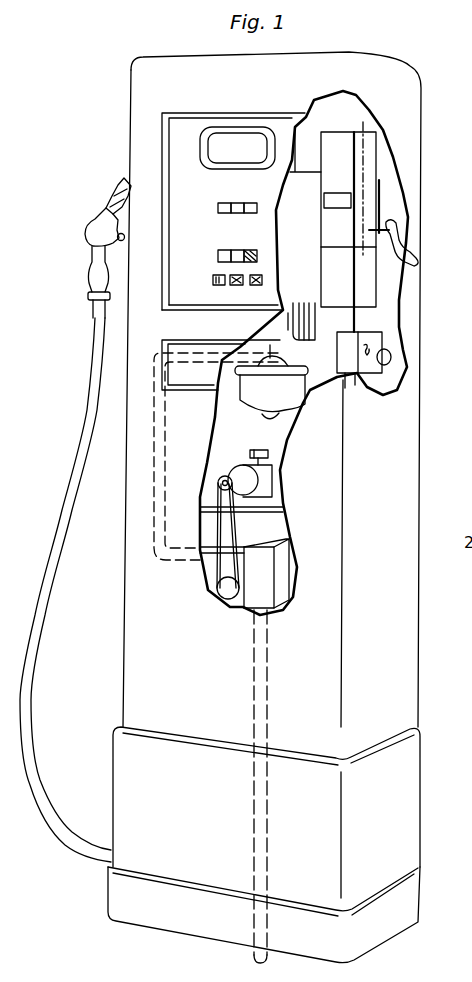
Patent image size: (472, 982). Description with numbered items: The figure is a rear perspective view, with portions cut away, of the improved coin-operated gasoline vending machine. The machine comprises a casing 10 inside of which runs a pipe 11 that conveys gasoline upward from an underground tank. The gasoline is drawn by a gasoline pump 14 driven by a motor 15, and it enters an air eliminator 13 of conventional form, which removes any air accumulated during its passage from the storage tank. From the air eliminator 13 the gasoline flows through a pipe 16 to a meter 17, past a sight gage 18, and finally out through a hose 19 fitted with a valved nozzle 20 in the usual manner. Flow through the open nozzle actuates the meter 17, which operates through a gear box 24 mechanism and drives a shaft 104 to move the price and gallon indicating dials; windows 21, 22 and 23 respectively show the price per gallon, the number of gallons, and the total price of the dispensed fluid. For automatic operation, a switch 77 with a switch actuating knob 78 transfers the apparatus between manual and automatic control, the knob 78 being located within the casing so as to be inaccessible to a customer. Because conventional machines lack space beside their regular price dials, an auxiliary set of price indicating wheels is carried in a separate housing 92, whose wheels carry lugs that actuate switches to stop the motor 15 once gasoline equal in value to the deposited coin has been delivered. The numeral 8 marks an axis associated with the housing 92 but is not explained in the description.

The casing 10 is at (150, 110).
The sight gage 18 is at (232, 147).
The window 23 is at (220, 204).
The window 22 is at (218, 249).
The window 21 is at (213, 280).
The gear box 24 is at (288, 322).
The housing 92 is at (370, 152).
The shaft axis 8 is at (361, 188).
The switch 77 is at (372, 327).
The switch actuating knob 78 is at (391, 358).
The shaft 104 is at (272, 352).
The meter 17 is at (265, 397).
The pipe 16 is at (158, 447).
The motor 15 is at (238, 469).
The gasoline pump 14 is at (227, 592).
The air eliminator 13 is at (263, 580).
The pipe 11 is at (254, 794).
The valved nozzle 20 is at (118, 190).
The hose 19 is at (82, 453).